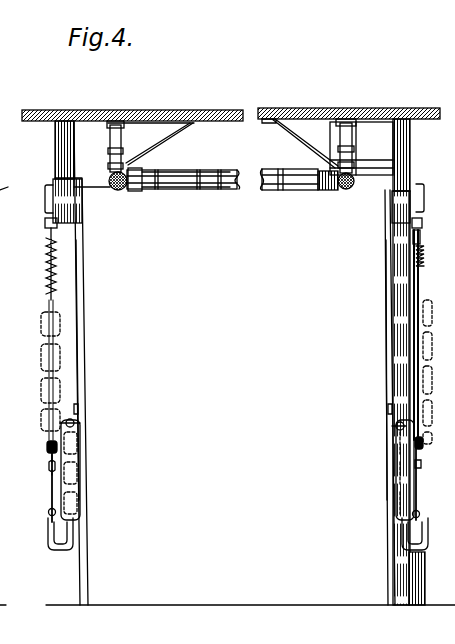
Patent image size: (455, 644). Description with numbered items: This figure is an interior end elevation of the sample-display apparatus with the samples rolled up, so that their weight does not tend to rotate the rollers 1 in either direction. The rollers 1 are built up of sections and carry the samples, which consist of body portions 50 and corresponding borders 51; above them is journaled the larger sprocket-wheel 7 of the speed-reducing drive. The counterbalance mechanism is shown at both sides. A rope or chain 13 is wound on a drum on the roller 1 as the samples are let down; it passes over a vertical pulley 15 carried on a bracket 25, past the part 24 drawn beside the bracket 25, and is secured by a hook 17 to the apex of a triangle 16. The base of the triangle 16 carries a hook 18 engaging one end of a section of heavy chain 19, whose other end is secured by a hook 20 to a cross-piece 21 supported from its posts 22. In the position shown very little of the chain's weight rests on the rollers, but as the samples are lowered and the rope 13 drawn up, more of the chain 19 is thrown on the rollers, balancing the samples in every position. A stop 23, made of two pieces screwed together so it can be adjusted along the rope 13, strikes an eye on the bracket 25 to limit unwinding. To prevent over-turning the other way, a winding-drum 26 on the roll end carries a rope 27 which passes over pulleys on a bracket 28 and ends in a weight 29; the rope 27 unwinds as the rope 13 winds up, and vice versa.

The roller 1 is at (232, 169).
The sprocket-wheel 7 is at (118, 191).
The rope or chain 13 is at (47, 276).
The vertical pulley 15 is at (46, 200).
The triangle 16 is at (51, 489).
The hook 17 is at (72, 149).
The hook 18 is at (48, 513).
The section of heavy chain 19 is at (50, 531).
The hook 20 is at (80, 424).
The cross-piece 21 is at (80, 412).
The post 22 is at (79, 356).
The stop 23 is at (47, 446).
The block 24 is at (46, 222).
The bracket 25 is at (61, 226).
The winding-drum 26 is at (328, 191).
The rope 27 is at (420, 240).
The bracket 28 is at (366, 164).
The weight 29 is at (424, 263).
The body portion 50 is at (186, 193).
The border 51 is at (150, 191).